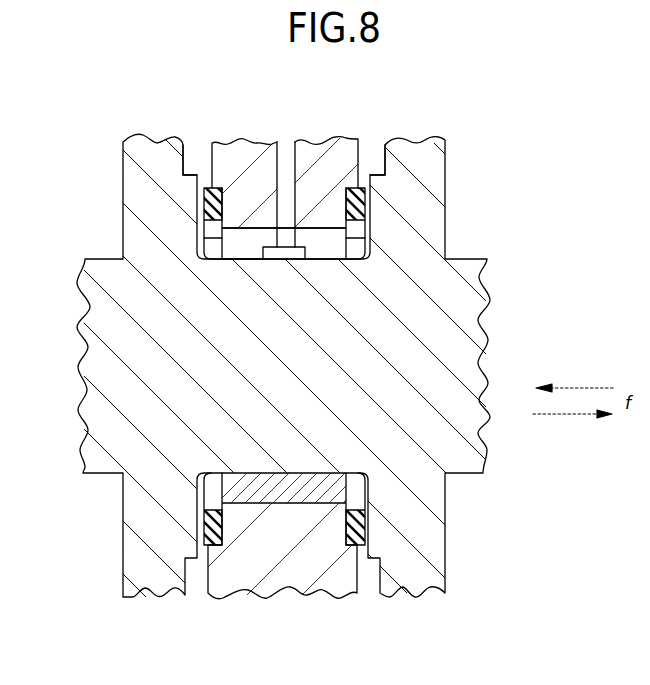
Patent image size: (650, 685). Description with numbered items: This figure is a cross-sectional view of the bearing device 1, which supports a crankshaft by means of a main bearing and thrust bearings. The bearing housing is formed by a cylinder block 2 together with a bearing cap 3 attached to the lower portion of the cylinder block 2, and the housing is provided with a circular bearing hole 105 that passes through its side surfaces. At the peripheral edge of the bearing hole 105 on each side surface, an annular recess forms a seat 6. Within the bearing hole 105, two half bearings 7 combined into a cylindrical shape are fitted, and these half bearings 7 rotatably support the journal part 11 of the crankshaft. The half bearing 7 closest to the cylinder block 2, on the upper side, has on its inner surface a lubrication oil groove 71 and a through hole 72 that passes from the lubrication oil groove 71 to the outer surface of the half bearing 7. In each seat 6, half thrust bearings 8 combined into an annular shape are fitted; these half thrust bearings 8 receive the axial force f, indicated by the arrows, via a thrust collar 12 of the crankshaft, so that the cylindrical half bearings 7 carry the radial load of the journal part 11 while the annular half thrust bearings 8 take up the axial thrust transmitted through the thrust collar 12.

The bearing device 1 is at (325, 342).
The cylinder block 2 is at (242, 150).
The bearing cap 3 is at (270, 597).
The seat 6 is at (367, 205).
The half bearing 7 is at (367, 242).
The half thrust bearing 8 is at (215, 259).
The journal part 11 is at (232, 403).
The thrust collar 12 is at (382, 174).
The lubrication oil groove 71 is at (282, 260).
The through hole 72 is at (286, 227).
The bearing hole 105 is at (243, 261).